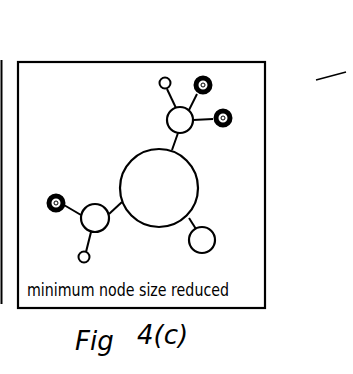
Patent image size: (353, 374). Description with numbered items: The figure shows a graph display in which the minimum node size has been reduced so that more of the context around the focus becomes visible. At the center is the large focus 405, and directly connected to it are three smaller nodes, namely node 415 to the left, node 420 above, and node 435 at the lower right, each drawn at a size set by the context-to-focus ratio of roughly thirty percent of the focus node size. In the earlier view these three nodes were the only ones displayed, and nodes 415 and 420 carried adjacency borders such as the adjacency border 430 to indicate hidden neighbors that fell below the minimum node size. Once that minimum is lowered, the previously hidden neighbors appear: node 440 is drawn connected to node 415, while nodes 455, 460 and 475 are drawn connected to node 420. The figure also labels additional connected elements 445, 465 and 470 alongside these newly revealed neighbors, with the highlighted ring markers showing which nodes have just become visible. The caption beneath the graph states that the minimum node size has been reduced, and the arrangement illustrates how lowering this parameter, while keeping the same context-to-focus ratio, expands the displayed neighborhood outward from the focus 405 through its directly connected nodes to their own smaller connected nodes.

The focus 405 is at (173, 169).
The node 415 is at (91, 216).
The node 420 is at (166, 122).
The adjacency border 430 is at (91, 258).
The node 435 is at (261, 220).
The node 440 is at (57, 193).
The highlighted node 445 is at (52, 205).
The node 455 is at (160, 83).
The node 460 is at (212, 80).
The highlighted node 465 is at (254, 144).
The highlighted node 470 is at (213, 87).
The node 475 is at (232, 118).